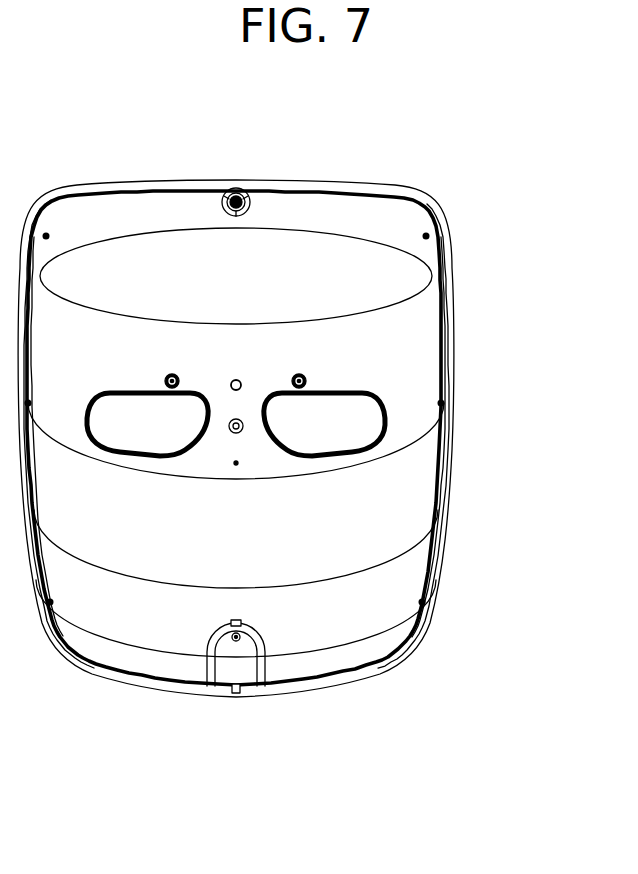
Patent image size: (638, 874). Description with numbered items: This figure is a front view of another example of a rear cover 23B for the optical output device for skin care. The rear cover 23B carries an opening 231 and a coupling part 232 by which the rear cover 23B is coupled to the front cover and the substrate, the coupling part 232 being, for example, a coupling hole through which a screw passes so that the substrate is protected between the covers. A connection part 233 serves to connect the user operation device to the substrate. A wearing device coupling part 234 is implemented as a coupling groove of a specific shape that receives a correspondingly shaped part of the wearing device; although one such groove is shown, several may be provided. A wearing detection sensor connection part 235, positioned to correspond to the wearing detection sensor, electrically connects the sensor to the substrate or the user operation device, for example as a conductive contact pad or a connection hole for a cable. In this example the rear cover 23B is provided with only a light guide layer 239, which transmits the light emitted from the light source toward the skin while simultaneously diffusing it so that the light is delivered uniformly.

The rear cover 23B is at (390, 157).
The opening 231 is at (367, 410).
The coupling part 232 is at (235, 188).
The connection part 233 is at (248, 672).
The wearing device coupling part 234 is at (244, 426).
The wearing detection sensor connection part 235 is at (240, 382).
The light guide layer 239 is at (403, 257).